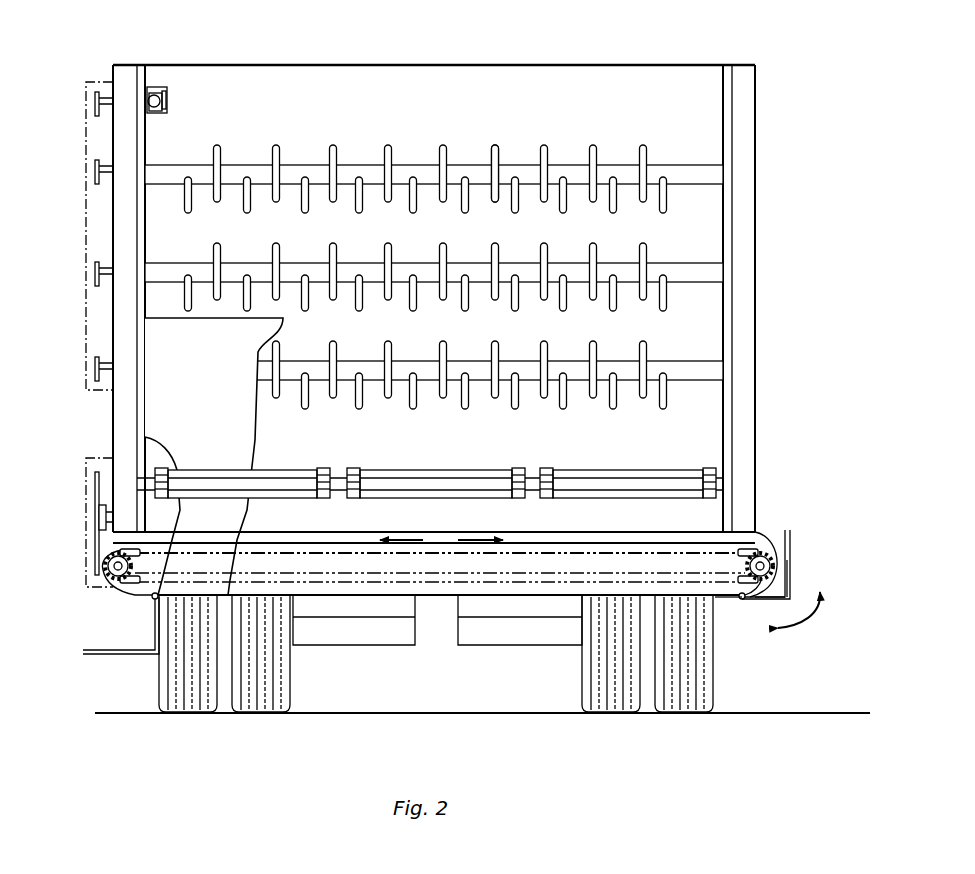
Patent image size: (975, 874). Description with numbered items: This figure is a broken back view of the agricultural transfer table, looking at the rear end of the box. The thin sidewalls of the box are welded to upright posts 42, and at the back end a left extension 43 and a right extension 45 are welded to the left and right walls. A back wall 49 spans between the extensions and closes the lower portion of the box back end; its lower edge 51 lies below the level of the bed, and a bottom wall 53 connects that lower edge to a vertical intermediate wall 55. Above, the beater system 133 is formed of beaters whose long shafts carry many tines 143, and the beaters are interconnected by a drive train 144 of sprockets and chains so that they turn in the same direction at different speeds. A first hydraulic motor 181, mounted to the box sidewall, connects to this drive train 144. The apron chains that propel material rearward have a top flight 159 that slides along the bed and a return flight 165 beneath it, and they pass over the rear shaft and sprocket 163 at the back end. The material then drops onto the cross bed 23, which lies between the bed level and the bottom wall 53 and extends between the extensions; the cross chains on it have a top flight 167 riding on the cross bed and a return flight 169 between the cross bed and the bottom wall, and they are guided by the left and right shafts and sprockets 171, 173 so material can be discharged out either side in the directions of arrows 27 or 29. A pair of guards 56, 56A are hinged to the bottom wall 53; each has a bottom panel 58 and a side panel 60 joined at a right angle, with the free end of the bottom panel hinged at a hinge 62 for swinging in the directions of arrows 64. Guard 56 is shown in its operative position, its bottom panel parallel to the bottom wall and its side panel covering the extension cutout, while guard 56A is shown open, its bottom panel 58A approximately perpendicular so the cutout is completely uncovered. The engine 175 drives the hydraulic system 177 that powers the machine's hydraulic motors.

The first hydraulic motor 181 is at (168, 100).
The left extension 43 is at (722, 100).
The tines 143 is at (276, 144).
The beater system 133 is at (496, 142).
The drive train 144 is at (98, 237).
The upright posts 42 is at (757, 332).
The right extension 45 is at (136, 411).
The back wall 49 is at (214, 456).
The return flight 165 is at (418, 490).
The top flight 159 is at (462, 478).
The rear shaft and sprocket 163 is at (615, 481).
The arrow 27 is at (406, 535).
The arrow 29 is at (470, 535).
The cross bed 23 is at (553, 568).
The vertical intermediate wall 55 is at (439, 549).
The top flight 167 is at (643, 556).
The left shaft and sprocket 171 is at (757, 550).
The side panel 60 is at (790, 540).
The right shaft and sprocket 173 is at (112, 598).
The guard 56A is at (99, 652).
The bottom panel 58A is at (172, 633).
The return flight 169 is at (383, 578).
The lower edge 51 is at (437, 600).
The hydraulic system 177 is at (318, 636).
The engine 175 is at (548, 633).
The bottom wall 53 is at (722, 600).
The guard 56 is at (762, 603).
The bottom panel 58 is at (778, 601).
The hinge 62 is at (741, 600).
The arrows 64 is at (820, 612).